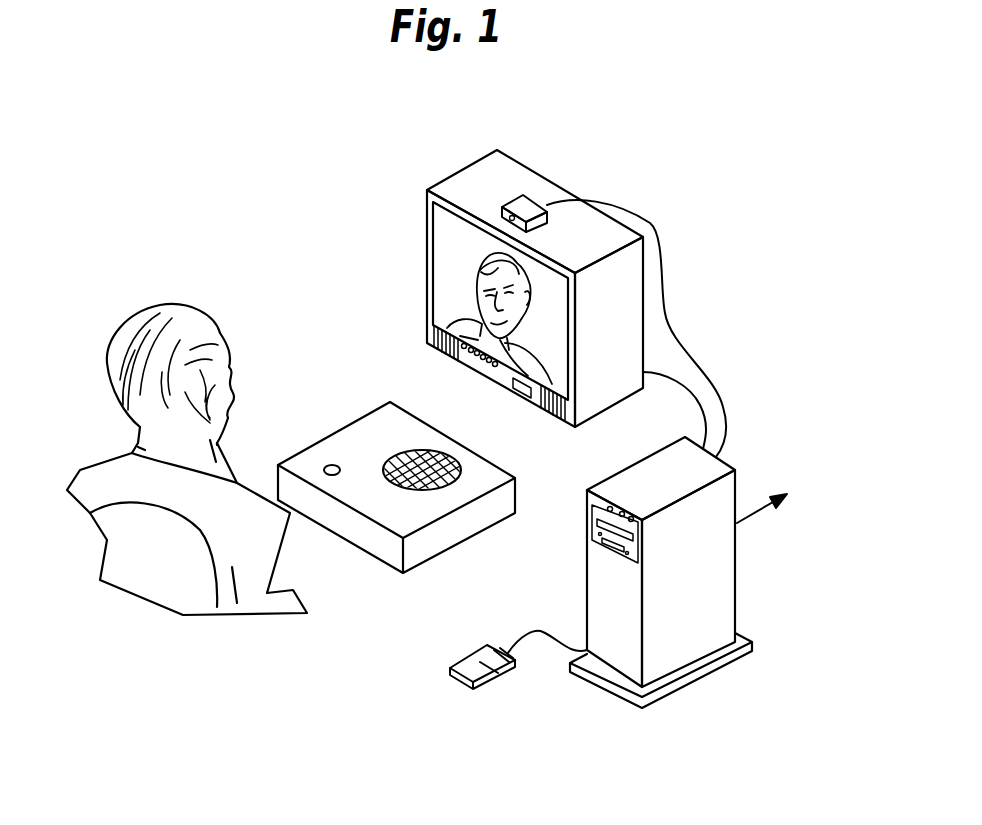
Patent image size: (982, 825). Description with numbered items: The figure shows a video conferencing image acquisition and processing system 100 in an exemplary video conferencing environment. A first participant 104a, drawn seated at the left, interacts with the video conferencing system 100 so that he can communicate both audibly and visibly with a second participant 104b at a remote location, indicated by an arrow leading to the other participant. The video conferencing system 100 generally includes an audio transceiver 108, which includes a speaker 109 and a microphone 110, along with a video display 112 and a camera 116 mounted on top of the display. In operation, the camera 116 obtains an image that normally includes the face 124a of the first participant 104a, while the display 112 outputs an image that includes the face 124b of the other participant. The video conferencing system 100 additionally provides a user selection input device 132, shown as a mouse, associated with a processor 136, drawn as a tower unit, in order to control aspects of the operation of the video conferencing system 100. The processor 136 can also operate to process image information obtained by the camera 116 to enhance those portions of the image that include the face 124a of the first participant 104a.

The video conferencing image acquisition and processing system 100 is at (428, 129).
The first participant 104a is at (157, 305).
The second participant 104b is at (847, 490).
The audio transceiver 108 is at (460, 543).
The speaker 109 is at (433, 457).
The microphone 110 is at (337, 474).
The video display 112 is at (610, 407).
The camera 116 is at (533, 197).
The face of the first participant 124a is at (222, 383).
The face of the other participant 124b is at (477, 292).
The user selection input device 132 is at (485, 683).
The processor 136 is at (735, 577).